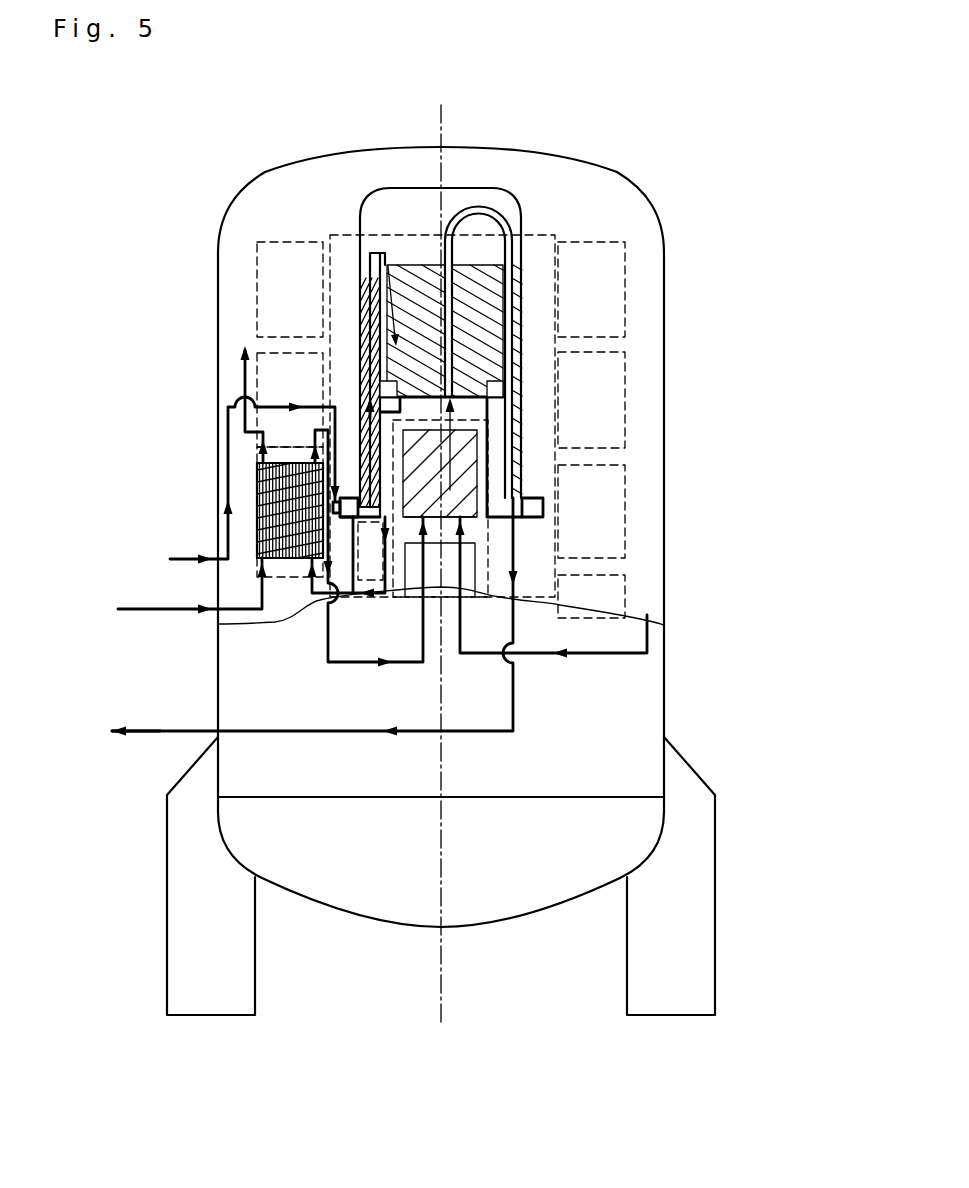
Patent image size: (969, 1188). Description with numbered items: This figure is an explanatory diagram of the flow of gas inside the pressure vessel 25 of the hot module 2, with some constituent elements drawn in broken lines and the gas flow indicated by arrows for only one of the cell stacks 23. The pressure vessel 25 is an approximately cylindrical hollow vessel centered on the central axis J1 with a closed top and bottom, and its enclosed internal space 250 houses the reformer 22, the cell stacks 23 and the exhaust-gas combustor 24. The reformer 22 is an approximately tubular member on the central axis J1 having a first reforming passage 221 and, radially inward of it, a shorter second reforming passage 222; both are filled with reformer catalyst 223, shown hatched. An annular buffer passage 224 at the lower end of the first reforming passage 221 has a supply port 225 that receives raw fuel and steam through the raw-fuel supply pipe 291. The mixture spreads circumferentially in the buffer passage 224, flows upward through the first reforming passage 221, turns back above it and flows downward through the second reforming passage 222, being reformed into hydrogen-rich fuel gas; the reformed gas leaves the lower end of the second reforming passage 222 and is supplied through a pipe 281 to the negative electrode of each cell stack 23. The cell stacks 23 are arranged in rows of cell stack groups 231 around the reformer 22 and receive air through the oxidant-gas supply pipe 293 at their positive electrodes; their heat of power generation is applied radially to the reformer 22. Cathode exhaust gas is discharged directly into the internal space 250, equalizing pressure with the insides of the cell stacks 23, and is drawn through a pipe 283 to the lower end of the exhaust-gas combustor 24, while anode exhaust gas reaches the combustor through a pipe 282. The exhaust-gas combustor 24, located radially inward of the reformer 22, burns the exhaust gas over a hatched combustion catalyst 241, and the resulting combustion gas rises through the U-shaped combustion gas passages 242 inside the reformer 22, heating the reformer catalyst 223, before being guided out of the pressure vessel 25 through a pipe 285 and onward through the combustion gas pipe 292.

The hot module 2 is at (197, 108).
The central axis J1 is at (437, 122).
The pressure vessel 25 is at (533, 182).
The internal space 250 is at (537, 168).
The combustion gas passage 242 is at (485, 206).
The reformer 22 is at (588, 253).
The first reforming passage 221 is at (528, 319).
The second reforming passage 222 is at (487, 344).
The reformer catalyst 223 is at (520, 372).
The cell stack 23 is at (257, 307).
The cell stack group 231 is at (724, 376).
The exhaust-gas combustor 24 is at (590, 465).
The combustion catalyst 241 is at (460, 495).
The buffer passage 224 is at (545, 508).
The supply port 225 is at (344, 507).
The raw-fuel supply pipe 291 is at (185, 553).
The oxidant-gas supply pipe 293 is at (143, 607).
The combustion gas pipe 292 is at (152, 735).
The pipe 281 is at (377, 594).
The pipe 282 is at (360, 663).
The pipe 283 is at (648, 640).
The pipe 285 is at (347, 733).